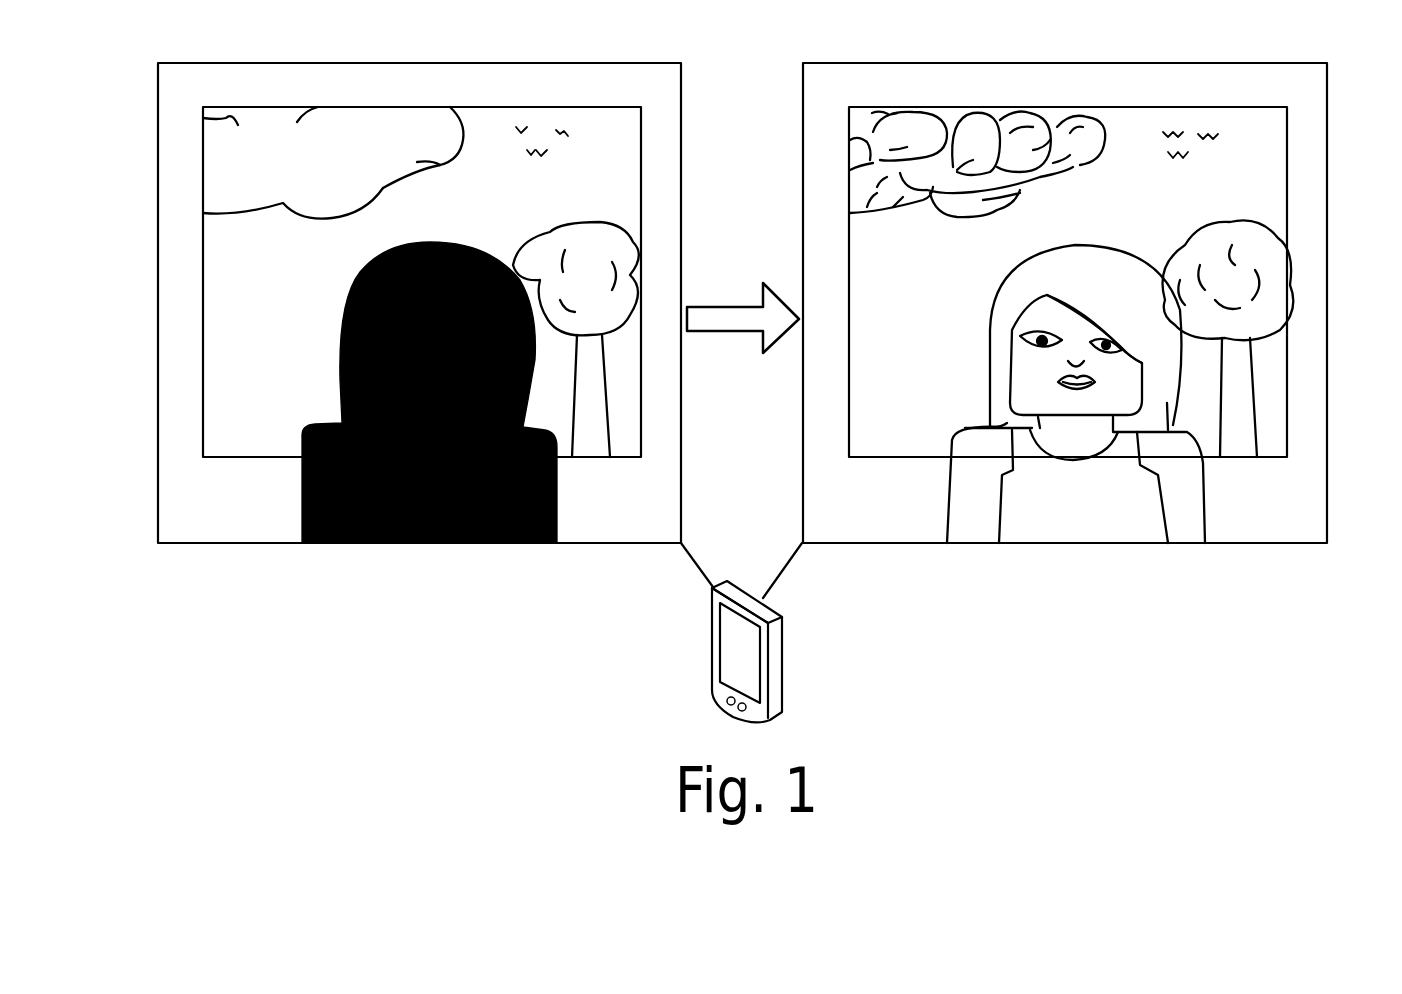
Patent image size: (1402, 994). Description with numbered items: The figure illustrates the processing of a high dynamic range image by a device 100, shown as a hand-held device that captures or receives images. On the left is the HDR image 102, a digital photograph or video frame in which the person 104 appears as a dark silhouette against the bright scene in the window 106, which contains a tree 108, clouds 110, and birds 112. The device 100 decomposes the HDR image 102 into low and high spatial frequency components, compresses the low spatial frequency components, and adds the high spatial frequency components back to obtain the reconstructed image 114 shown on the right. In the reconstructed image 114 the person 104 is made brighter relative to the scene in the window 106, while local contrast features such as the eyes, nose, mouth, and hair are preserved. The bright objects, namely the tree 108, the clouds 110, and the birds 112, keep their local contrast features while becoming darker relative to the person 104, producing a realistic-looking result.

The device 100 is at (713, 668).
The HDR image 102 is at (374, 543).
The person 104 is at (447, 543).
The window 106 is at (252, 457).
The tree 108 is at (622, 275).
The clouds 110 is at (333, 218).
The birds 112 is at (573, 151).
The reconstructed image 114 is at (1022, 543).